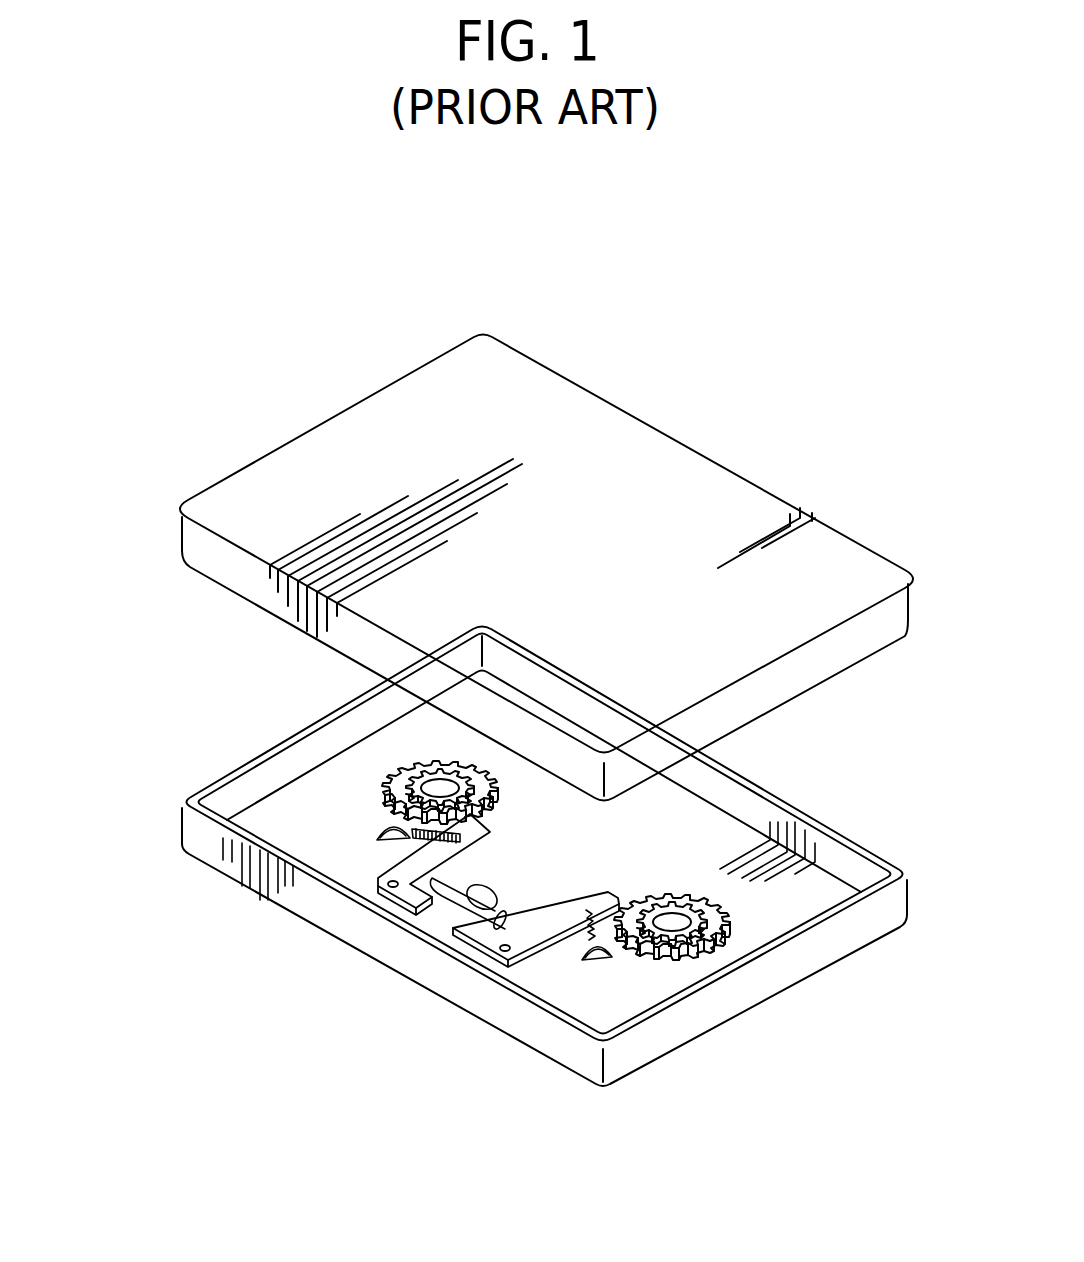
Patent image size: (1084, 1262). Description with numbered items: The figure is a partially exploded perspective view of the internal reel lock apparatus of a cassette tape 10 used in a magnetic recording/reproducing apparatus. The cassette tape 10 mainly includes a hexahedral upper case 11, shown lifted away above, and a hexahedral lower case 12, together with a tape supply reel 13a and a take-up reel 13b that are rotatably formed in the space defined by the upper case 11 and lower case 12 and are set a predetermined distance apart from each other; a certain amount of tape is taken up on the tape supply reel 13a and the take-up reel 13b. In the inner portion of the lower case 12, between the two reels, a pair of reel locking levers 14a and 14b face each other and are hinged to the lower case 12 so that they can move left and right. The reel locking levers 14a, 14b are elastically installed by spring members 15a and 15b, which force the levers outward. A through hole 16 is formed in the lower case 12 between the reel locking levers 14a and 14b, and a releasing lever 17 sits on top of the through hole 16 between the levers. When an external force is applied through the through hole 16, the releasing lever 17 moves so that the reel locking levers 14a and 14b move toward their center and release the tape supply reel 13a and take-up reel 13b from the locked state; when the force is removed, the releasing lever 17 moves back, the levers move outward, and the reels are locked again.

The cassette tape 10 is at (233, 897).
The upper case 11 is at (576, 386).
The lower case 12 is at (655, 1040).
The tape supply reel 13a is at (390, 777).
The take-up reel 13b is at (700, 955).
The reel locking lever 14a is at (398, 896).
The reel locking lever 14b is at (470, 957).
The spring member 15a is at (380, 846).
The spring member 15b is at (590, 912).
The through hole 16 is at (492, 892).
The releasing lever 17 is at (452, 915).